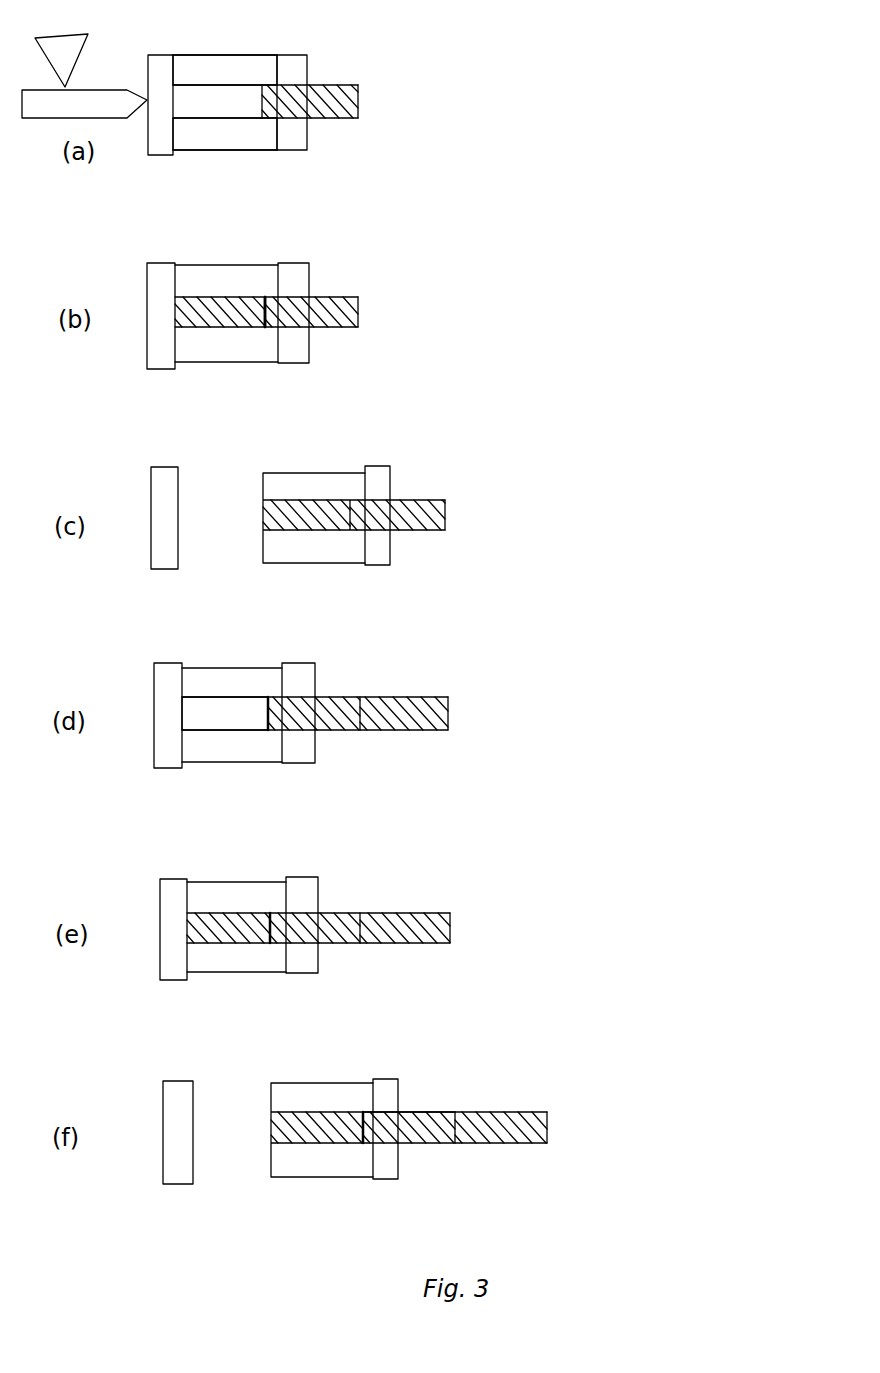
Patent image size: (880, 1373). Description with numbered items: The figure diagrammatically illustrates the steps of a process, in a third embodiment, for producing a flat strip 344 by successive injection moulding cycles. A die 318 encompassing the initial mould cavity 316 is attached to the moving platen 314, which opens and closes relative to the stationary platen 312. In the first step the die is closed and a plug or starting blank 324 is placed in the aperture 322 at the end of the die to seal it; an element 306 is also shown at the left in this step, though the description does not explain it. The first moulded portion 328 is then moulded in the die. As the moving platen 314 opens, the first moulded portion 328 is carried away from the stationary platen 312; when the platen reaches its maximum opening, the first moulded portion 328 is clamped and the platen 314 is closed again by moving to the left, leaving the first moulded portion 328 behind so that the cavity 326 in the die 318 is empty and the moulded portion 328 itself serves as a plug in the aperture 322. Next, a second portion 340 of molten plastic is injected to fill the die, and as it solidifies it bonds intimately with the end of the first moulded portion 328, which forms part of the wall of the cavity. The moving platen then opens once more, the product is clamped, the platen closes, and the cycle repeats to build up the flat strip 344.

The light source 306 is at (82, 55).
The stationary platen 312 is at (158, 155).
The moving platen 314 is at (293, 150).
The initial mould cavity 316 is at (227, 85).
The die 318 is at (225, 153).
The starting blank 324 is at (330, 80).
The aperture 322 is at (295, 293).
The first moulded portion 328 is at (223, 333).
The cavity 326 is at (225, 697).
The second portion 340 is at (228, 912).
The flat strip 344 is at (425, 1108).